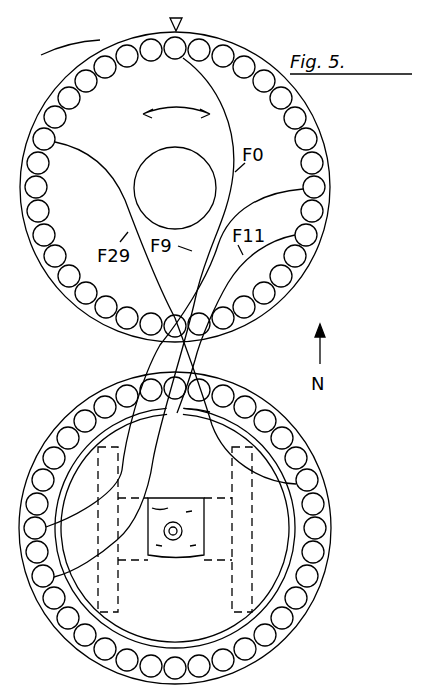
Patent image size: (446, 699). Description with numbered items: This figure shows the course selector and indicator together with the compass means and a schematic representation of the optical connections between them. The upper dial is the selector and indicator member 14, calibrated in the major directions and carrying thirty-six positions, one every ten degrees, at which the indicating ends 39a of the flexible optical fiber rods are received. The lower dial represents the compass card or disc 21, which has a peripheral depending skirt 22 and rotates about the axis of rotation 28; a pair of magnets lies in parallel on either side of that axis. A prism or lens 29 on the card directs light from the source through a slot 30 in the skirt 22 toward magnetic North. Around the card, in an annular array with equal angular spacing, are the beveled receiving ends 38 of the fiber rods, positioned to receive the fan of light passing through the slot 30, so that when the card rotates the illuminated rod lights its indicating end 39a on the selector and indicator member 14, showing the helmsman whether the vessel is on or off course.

The selector and indicator member 14 is at (116, 142).
The indicating end 39a is at (97, 60).
The beveled receiving end 38 is at (60, 432).
The slot 30 is at (178, 416).
The prism or lens 29 is at (195, 513).
The axis of rotation 28 is at (180, 545).
The card or disc 21 is at (172, 613).
The peripheral depending skirt 22 is at (192, 645).